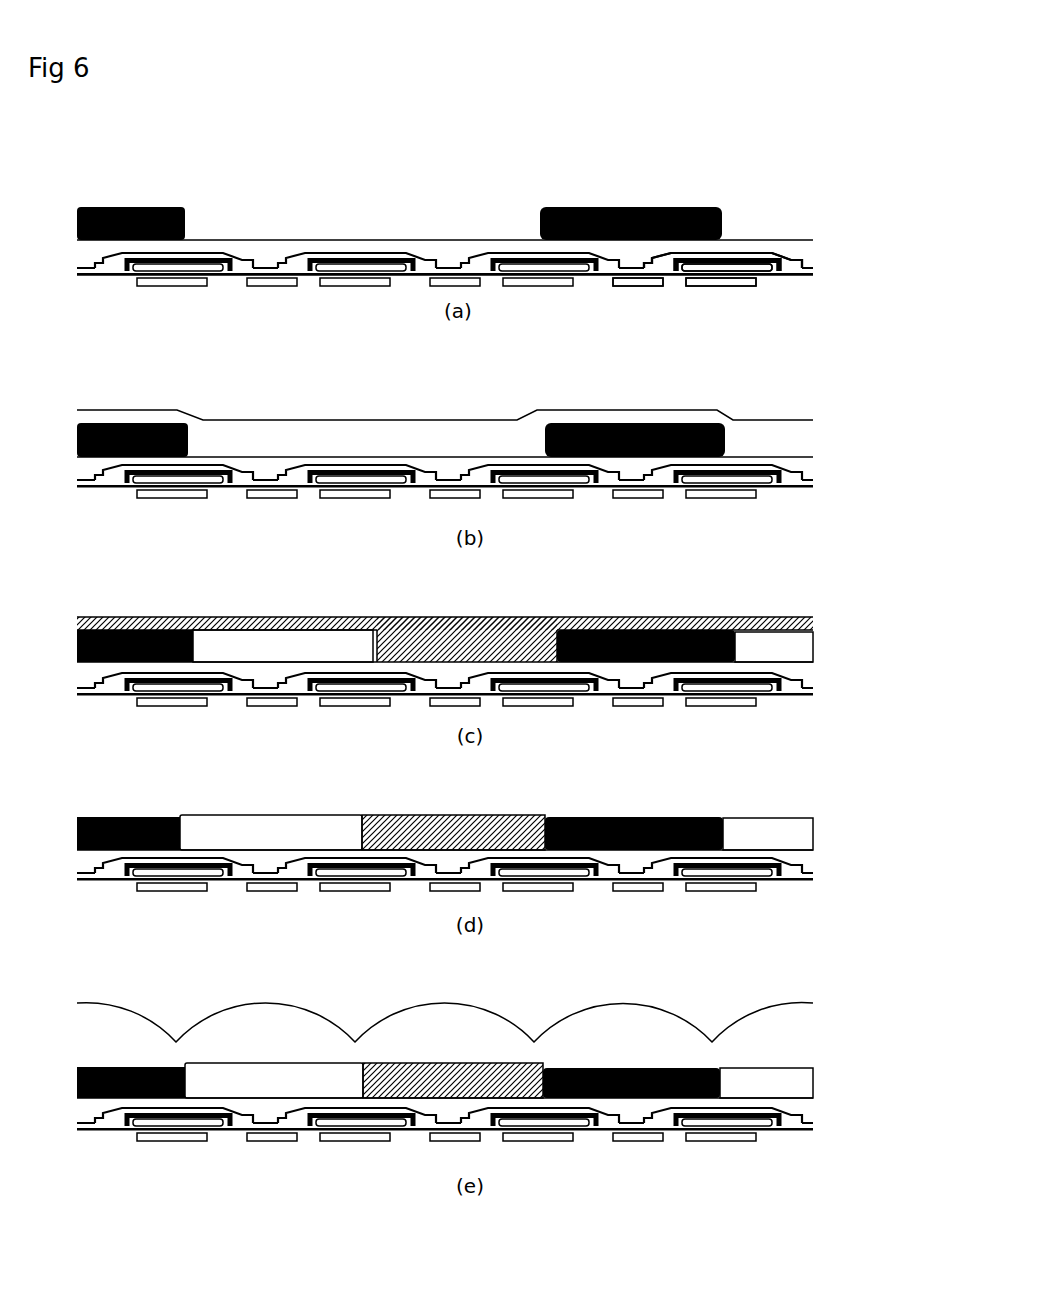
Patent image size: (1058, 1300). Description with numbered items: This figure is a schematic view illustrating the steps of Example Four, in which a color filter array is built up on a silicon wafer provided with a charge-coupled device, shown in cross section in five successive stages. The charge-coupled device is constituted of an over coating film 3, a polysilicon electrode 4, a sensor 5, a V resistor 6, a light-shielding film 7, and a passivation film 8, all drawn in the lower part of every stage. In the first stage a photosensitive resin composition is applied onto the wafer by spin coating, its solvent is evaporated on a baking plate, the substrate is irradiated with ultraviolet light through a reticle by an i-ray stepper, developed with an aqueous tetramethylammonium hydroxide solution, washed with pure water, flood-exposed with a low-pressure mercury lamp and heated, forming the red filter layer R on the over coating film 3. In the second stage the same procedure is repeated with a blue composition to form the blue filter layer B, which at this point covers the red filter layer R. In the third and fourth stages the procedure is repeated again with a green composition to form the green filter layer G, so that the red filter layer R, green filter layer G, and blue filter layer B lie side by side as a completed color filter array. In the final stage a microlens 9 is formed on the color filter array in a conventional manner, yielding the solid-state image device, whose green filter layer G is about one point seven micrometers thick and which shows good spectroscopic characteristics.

The over coating film 3 is at (757, 247).
The polysilicon electrode 4 is at (767, 277).
The sensor 5 is at (655, 288).
The V resistor 6 is at (733, 288).
The light-shielding film 7 is at (800, 268).
The passivation film 8 is at (790, 257).
The microlens 9 is at (798, 1035).
The red filter layer R is at (717, 207).
The green filter layer G is at (810, 625).
The blue filter layer B is at (802, 435).